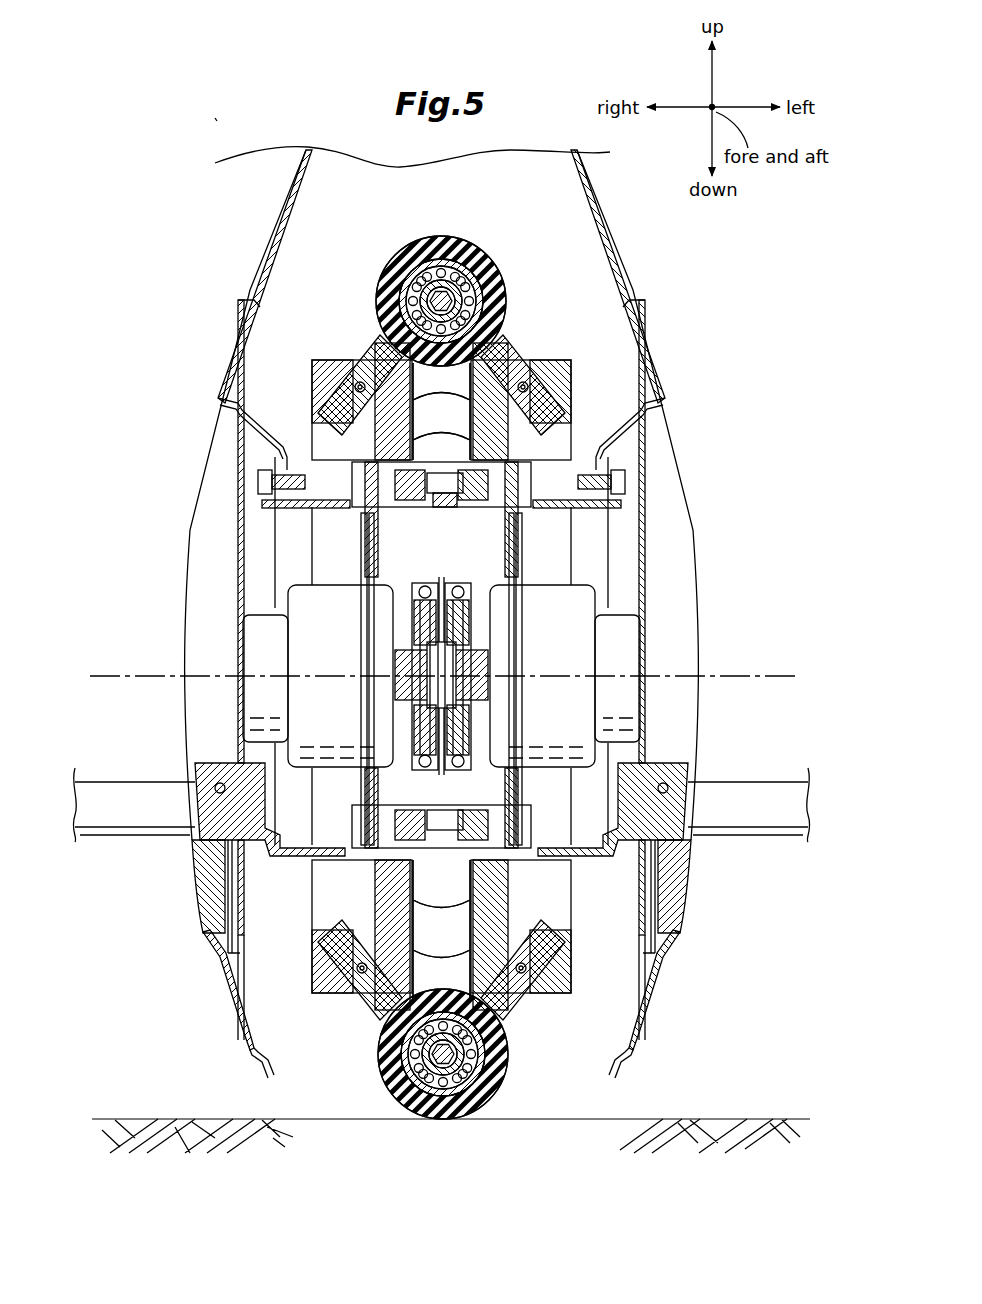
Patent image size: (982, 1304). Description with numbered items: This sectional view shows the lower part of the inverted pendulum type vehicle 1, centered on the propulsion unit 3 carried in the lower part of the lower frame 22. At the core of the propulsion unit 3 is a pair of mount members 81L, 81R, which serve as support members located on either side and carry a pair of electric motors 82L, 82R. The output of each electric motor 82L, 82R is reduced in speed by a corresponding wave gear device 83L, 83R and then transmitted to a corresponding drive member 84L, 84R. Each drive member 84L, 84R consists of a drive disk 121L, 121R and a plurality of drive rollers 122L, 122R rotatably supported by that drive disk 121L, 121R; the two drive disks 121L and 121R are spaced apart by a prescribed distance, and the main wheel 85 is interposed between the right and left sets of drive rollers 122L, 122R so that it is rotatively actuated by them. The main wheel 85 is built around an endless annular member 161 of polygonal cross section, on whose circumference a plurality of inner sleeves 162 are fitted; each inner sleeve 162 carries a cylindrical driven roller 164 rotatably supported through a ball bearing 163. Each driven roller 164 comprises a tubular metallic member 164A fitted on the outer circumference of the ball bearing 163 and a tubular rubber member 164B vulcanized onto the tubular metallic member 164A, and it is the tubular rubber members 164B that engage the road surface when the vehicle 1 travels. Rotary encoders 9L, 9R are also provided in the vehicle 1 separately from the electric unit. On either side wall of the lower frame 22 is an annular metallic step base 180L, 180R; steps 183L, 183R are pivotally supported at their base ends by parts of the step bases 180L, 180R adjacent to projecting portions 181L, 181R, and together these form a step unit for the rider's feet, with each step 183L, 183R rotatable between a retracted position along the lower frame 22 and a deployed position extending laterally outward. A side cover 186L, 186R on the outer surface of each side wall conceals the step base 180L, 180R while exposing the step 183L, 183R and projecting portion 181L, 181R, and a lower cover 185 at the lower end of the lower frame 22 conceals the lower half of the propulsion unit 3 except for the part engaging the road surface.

The inverted pendulum type vehicle 1 is at (215, 118).
The propulsion unit 3 is at (278, 988).
The lower frame 22 is at (307, 183).
The main wheel 85 is at (475, 240).
The drive member 84R is at (355, 330).
The drive member 84L is at (532, 330).
The drive roller 122R is at (370, 348).
The drive roller 122L is at (518, 348).
The drive disk 121R is at (318, 398).
The drive disk 121L is at (565, 399).
The side cover 186R is at (240, 428).
The side cover 186L is at (643, 428).
The step base 180R is at (283, 512).
The step base 180L is at (600, 511).
The mount member 81R is at (363, 550).
The mount member 81L is at (520, 550).
The wave gear device 83R is at (408, 617).
The wave gear device 83L is at (475, 617).
The electric motor 82R is at (302, 648).
The electric motor 82L is at (581, 648).
The rotary encoder 9R is at (253, 703).
The rotary encoder 9L is at (630, 703).
The step 183R is at (133, 793).
The step 183L is at (762, 790).
The projecting portion 181R is at (207, 918).
The projecting portion 181L is at (673, 923).
The driven roller 164 is at (370, 1065).
The tubular metallic member 164A is at (382, 1085).
The tubular rubber member 164B is at (423, 1083).
The ball bearing 163 is at (437, 1073).
The inner sleeve 162 is at (462, 1083).
The annular member 161 is at (443, 1057).
The lower cover 185 is at (620, 1062).